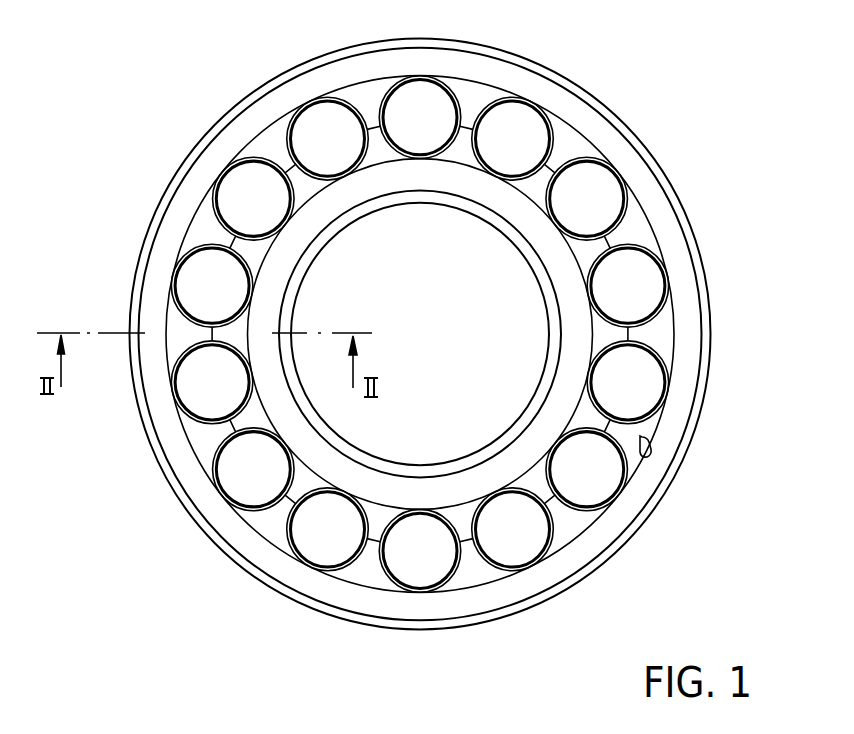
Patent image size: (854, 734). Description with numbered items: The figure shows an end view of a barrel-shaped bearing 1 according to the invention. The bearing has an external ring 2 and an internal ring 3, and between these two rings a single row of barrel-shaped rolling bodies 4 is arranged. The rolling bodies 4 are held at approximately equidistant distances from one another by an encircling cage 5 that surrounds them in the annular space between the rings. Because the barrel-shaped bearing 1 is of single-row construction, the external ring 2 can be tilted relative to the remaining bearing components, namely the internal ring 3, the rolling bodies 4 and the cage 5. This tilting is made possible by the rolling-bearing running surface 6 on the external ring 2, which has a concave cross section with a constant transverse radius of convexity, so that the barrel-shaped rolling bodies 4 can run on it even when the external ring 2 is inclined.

The barrel-shaped bearing 1 is at (474, 317).
The external ring 2 is at (610, 135).
The internal ring 3 is at (560, 385).
The barrel-shaped rolling bodies 4 is at (607, 180).
The encircling cage 5 is at (648, 335).
The rolling-bearing running surface 6 is at (645, 442).